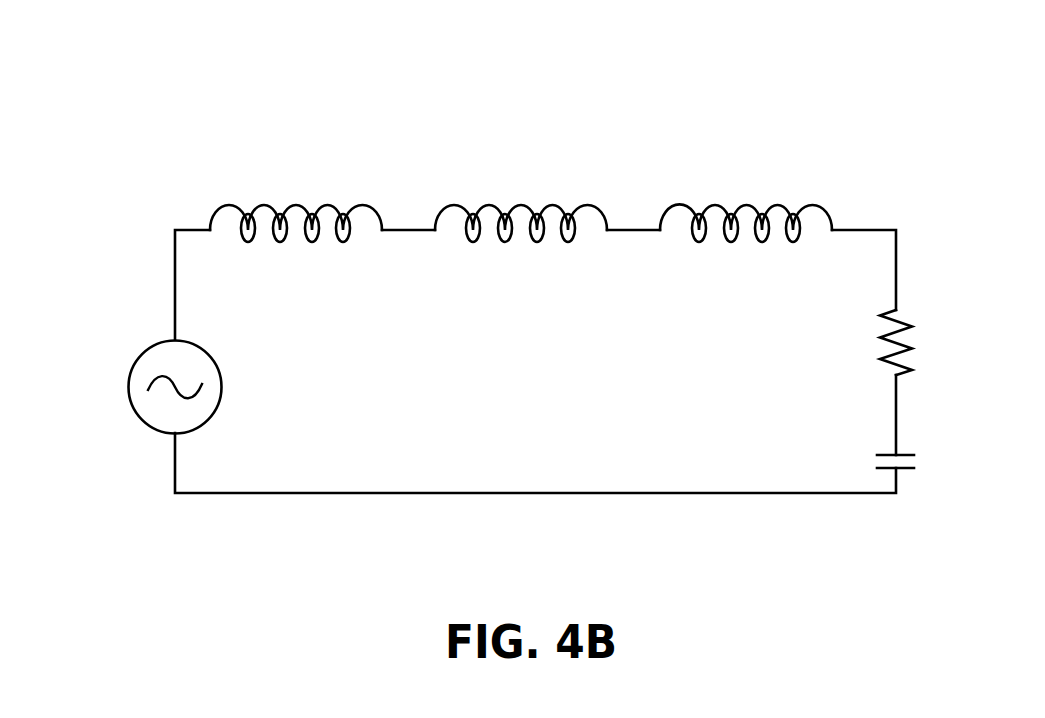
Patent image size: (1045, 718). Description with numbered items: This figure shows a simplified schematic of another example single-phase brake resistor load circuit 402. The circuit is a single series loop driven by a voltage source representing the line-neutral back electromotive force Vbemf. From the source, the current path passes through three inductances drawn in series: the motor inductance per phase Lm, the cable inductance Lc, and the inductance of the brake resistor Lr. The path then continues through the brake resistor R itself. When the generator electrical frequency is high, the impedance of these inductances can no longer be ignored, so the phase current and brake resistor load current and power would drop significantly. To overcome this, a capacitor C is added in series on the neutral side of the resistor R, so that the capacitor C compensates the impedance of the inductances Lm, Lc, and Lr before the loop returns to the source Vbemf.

The single-phase brake resistor load circuit 402 is at (103, 152).
The motor inductance Lm is at (296, 206).
The cable inductance Lc is at (521, 206).
The brake resistor inductance Lr is at (746, 206).
The brake resistor R is at (909, 342).
The capacitor C is at (907, 464).
The line-neutral back electromotive force Vbemf is at (211, 387).